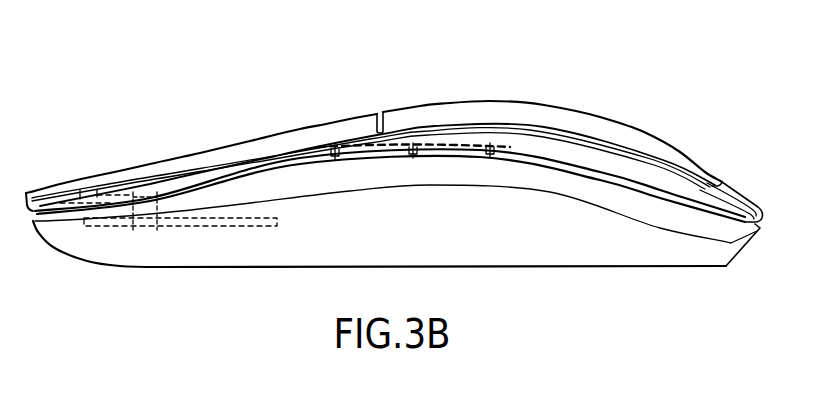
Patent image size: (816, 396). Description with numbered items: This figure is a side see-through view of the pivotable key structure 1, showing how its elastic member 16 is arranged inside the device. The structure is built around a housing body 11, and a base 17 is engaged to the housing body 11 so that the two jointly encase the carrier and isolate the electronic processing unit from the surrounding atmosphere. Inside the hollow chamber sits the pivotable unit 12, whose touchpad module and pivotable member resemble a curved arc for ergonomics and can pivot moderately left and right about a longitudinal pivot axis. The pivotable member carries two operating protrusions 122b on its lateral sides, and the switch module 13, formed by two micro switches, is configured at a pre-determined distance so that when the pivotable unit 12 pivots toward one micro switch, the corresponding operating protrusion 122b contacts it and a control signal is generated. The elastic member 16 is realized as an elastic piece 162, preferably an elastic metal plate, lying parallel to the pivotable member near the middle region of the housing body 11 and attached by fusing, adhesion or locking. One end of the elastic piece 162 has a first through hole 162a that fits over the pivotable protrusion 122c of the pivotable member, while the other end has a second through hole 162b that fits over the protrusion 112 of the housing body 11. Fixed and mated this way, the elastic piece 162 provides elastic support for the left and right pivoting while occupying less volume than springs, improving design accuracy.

The pivotable key structure 1 is at (114, 58).
The housing body 11 is at (738, 193).
The pivotable unit 12 is at (295, 134).
The switch module 13 is at (135, 192).
The elastic member 16 is at (429, 62).
The base 17 is at (727, 233).
The protrusion 112 is at (490, 158).
The operating protrusion 122b is at (133, 190).
The pivotable protrusion 122c is at (335, 161).
The elastic piece 162 is at (433, 140).
The first through hole 162a is at (338, 149).
The second through hole 162b is at (493, 143).